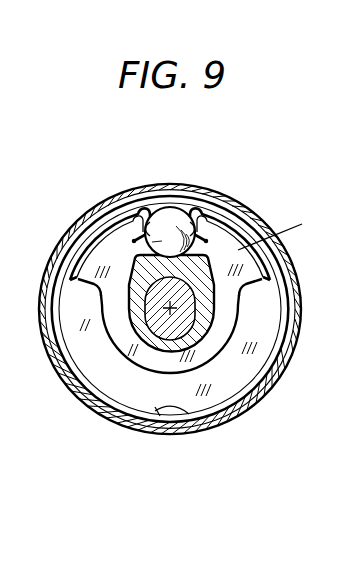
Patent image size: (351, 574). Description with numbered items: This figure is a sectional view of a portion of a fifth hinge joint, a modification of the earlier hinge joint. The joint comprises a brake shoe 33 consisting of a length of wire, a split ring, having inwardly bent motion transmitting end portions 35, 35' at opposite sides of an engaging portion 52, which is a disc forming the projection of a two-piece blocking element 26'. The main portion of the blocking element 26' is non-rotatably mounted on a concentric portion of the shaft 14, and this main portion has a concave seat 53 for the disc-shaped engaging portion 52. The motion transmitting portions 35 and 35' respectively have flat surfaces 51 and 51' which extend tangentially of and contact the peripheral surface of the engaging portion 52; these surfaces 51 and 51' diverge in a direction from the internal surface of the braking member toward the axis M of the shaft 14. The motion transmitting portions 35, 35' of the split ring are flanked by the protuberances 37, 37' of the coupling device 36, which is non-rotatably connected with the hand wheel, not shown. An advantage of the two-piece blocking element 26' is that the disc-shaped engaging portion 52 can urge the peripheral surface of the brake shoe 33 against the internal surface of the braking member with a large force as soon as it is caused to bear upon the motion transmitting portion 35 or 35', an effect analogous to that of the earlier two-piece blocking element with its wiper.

The shaft 14 is at (252, 390).
The brake shoe 33 is at (198, 422).
The motion transmitting end portion 35 is at (229, 292).
The motion transmitting end portion 35' is at (111, 290).
The protuberance 37 is at (243, 232).
The protuberance 37' is at (98, 228).
The two-piece blocking element 26' is at (207, 331).
The coupling device 36 is at (123, 338).
The concave seat 53 is at (157, 252).
The axis M is at (170, 312).
The engaging portion 52 is at (280, 233).
The flat surface 51 is at (181, 200).
The flat surface 51' is at (167, 189).